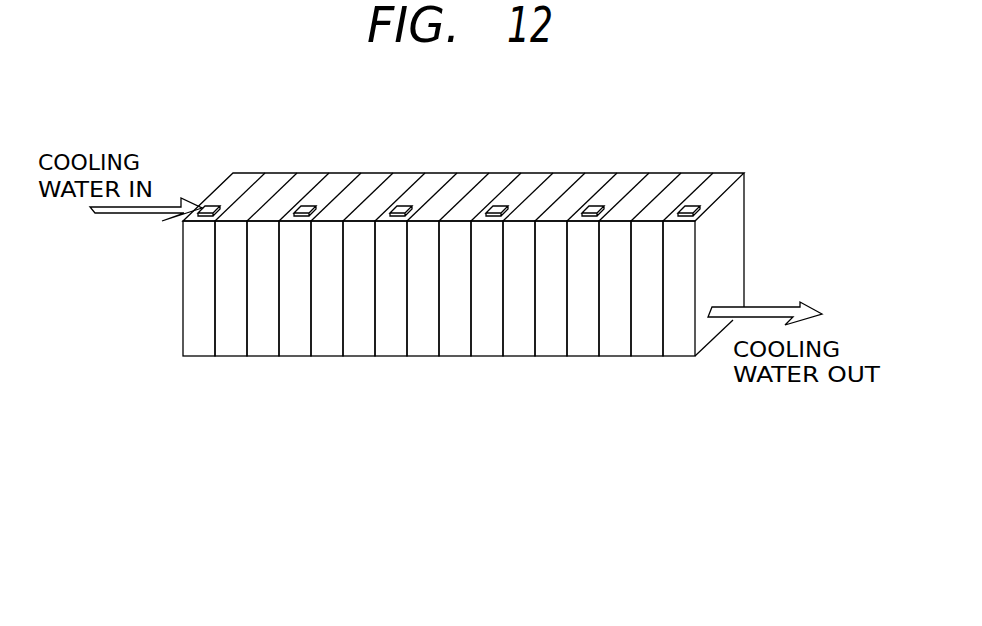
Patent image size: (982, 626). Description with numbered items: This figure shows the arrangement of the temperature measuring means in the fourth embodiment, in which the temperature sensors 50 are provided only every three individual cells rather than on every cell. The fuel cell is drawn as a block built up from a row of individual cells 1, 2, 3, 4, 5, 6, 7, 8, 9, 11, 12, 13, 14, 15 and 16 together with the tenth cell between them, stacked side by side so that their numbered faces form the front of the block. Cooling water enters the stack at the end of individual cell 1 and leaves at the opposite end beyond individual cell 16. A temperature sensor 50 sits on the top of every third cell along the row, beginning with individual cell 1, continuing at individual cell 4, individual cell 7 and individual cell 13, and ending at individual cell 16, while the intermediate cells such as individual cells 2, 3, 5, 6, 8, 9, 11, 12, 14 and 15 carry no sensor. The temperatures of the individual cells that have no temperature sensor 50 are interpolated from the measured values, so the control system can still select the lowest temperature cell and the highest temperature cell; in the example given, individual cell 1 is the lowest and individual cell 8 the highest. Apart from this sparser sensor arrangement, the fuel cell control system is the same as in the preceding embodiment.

The temperature sensor 50 is at (205, 206).
The individual cell 1 is at (199, 288).
The individual cell 2 is at (231, 288).
The individual cell 3 is at (263, 288).
The individual cell 4 is at (295, 288).
The individual cell 5 is at (327, 288).
The individual cell 6 is at (359, 288).
The individual cell 7 is at (391, 288).
The individual cell 8 is at (423, 288).
The individual cell 9 is at (455, 288).
The individual cell 11 is at (519, 288).
The unit cell 12 is at (551, 288).
The unit cell 13 is at (583, 288).
The unit cell 14 is at (615, 288).
The unit cell 15 is at (647, 288).
The unit cell 16 is at (679, 288).